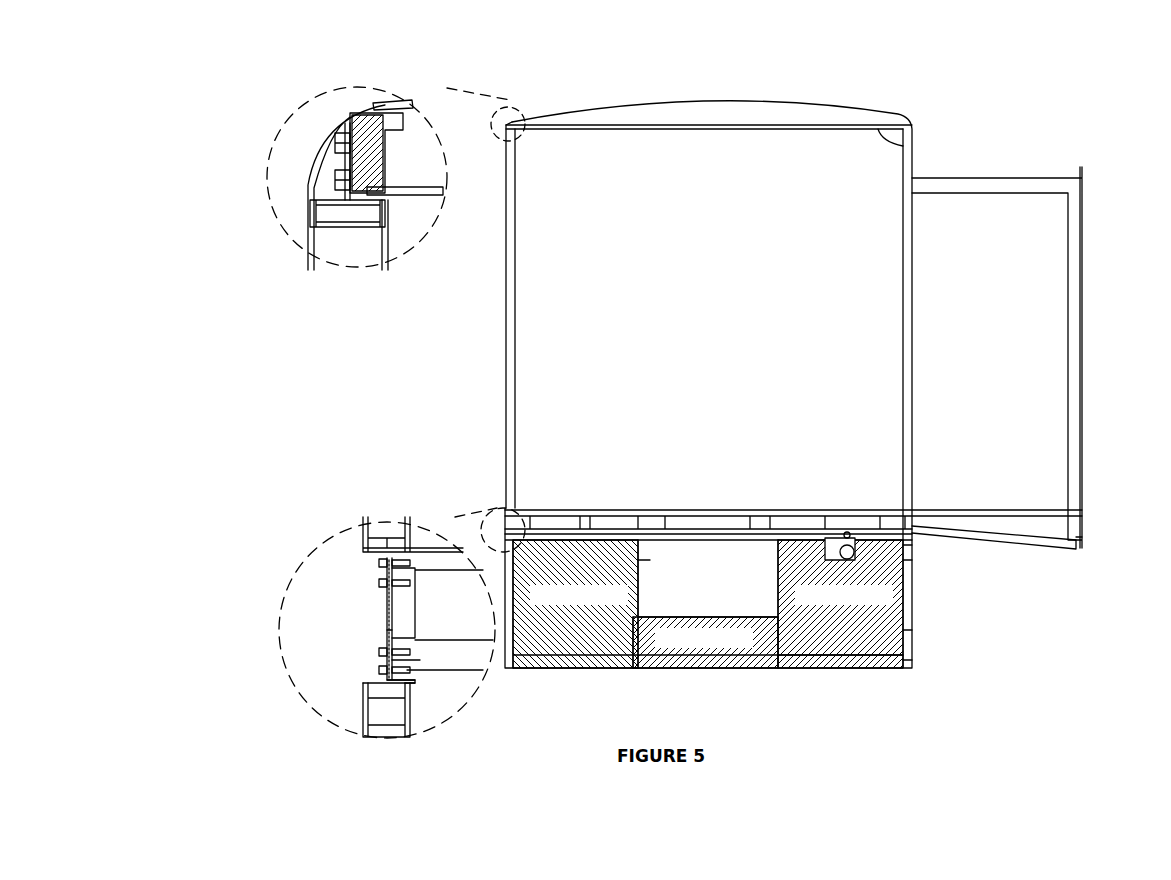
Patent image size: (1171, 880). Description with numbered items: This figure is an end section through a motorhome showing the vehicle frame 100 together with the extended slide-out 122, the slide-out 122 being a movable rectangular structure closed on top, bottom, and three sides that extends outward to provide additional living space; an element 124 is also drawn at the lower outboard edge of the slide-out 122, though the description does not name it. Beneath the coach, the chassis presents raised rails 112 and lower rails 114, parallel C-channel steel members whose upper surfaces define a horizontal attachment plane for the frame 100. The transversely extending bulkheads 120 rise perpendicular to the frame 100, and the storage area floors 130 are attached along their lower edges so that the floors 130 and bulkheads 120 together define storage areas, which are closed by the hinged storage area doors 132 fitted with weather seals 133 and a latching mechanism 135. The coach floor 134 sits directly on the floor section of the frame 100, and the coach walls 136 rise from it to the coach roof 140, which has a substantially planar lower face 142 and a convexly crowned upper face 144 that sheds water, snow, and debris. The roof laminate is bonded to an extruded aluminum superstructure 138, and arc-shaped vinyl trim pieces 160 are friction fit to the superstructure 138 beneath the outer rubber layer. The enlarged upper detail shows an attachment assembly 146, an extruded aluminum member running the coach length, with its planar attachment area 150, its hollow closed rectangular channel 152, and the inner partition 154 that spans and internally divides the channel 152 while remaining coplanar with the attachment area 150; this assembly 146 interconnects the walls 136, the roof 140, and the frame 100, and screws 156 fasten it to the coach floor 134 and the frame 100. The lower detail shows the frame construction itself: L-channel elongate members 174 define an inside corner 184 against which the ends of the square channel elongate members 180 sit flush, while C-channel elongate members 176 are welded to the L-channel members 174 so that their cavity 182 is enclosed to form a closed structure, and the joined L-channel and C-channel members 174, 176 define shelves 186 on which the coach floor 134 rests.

The vehicle frame 100 is at (612, 508).
The raised rails 112 is at (778, 565).
The lower rails 114 is at (640, 617).
The bulkheads 120 is at (860, 670).
The slide-out 122 is at (1082, 302).
The ramp 124 is at (940, 535).
The storage area floors 130 is at (595, 670).
The storage area doors 132 is at (906, 615).
The weather seals 133 is at (906, 638).
The coach floor 134 is at (552, 508).
The latching mechanism 135 is at (912, 668).
The coach walls 136 is at (505, 370).
The aluminum superstructure 138 is at (370, 102).
The coach roof 140 is at (851, 116).
The lower face 142 is at (910, 146).
The upper face 144 is at (765, 100).
The attachment assemblies 146 is at (382, 216).
The planar attachment area 150 is at (332, 162).
The rectangular channel 152 is at (310, 221).
The inner partition 154 is at (347, 210).
The screws 156 is at (333, 130).
The trim pieces 160 is at (338, 117).
The L-channel elongate members 174 is at (382, 633).
The C-channel elongate members 176 is at (387, 610).
The square channel elongate members 180 is at (420, 660).
The cavity 182 is at (407, 622).
The inside corner 184 is at (417, 684).
The shelves 186 is at (400, 569).